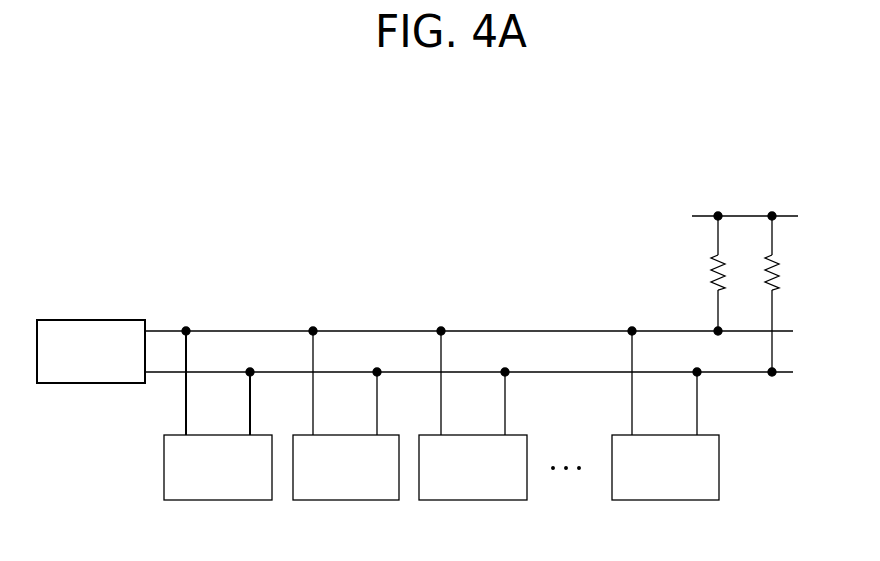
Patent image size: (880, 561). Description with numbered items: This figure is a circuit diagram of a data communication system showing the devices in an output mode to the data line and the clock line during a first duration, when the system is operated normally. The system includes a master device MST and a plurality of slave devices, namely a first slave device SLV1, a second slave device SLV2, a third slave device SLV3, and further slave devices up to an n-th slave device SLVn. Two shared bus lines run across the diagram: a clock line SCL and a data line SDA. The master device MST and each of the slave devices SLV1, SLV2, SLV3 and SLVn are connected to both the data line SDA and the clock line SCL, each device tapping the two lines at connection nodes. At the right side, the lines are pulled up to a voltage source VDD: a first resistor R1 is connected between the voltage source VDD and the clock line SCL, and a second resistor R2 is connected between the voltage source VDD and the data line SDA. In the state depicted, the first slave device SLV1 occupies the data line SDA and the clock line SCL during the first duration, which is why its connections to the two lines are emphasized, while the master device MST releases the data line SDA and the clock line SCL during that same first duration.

The master device MST is at (91, 351).
The first slave device SLV1 is at (218, 413).
The second slave device SLV2 is at (346, 413).
The third slave device SLV3 is at (473, 413).
The n-th slave device SLVn is at (665, 413).
The clock line SCL is at (489, 331).
The data line SDA is at (491, 372).
The voltage source VDD is at (745, 206).
The first resistor R1 is at (703, 275).
The second resistor R2 is at (790, 296).